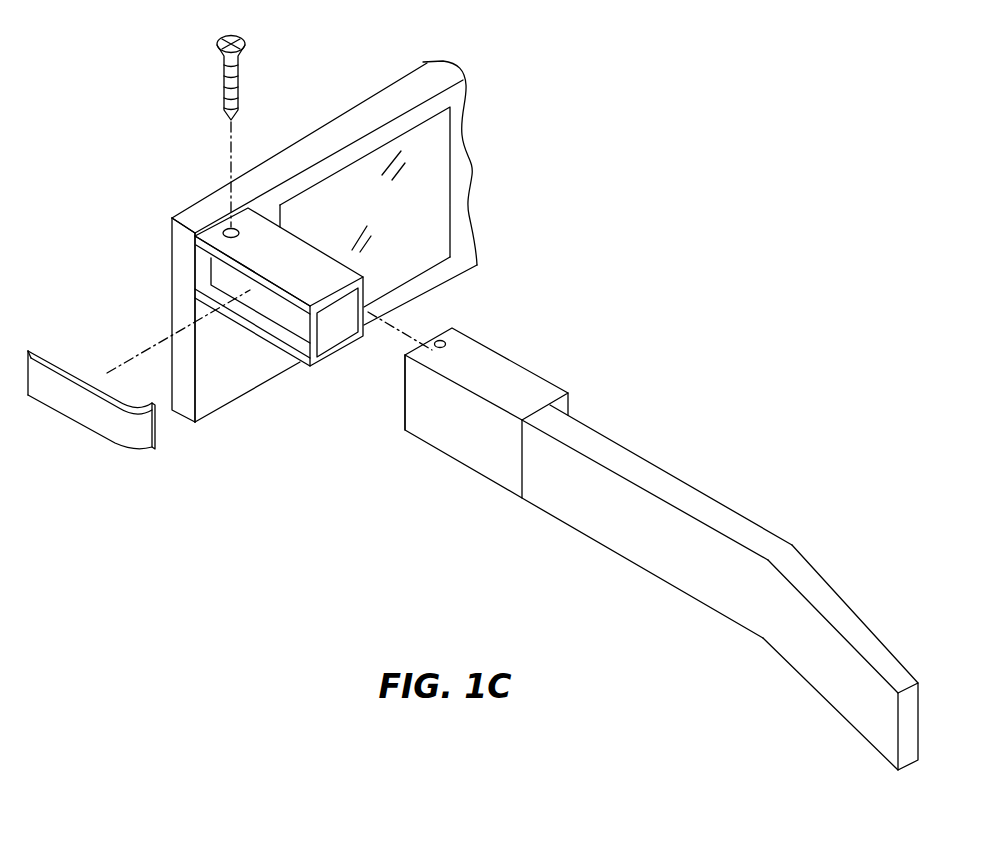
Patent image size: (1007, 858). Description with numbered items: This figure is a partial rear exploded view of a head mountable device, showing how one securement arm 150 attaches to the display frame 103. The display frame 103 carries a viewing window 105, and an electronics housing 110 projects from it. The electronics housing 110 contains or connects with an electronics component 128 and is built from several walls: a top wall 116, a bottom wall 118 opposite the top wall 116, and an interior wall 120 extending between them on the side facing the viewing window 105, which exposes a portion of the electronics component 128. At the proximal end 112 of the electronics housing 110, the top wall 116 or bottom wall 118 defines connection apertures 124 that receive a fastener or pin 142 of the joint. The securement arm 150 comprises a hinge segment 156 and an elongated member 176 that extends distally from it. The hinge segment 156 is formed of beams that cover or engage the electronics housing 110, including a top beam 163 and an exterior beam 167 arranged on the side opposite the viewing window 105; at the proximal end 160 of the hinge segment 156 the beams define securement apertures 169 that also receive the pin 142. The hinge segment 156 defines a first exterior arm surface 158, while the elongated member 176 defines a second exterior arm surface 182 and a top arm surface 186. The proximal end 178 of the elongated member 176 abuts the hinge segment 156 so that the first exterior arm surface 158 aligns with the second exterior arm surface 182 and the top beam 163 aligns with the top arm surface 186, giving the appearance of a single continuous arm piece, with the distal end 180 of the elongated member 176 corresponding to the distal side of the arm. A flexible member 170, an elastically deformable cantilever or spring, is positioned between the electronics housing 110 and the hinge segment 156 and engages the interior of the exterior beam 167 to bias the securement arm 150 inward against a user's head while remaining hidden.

The display frame 103 is at (330, 212).
The viewing window 105 is at (443, 133).
The electronics housing 110 is at (300, 287).
The proximal end of the electronics housing 112 is at (213, 238).
The top wall 116 is at (298, 284).
The bottom wall 118 is at (310, 350).
The interior wall 120 is at (379, 316).
The connection apertures 124 is at (229, 230).
The electronics component 128 is at (220, 268).
The fastener or pin 142 is at (226, 61).
The securement arm 150 is at (630, 515).
The hinge segment 156 is at (508, 368).
The first exterior arm surface 158 is at (487, 463).
The proximal end of the hinge segment 160 is at (489, 404).
The top beam 163 is at (538, 383).
The exterior beam 167 is at (425, 425).
The securement apertures 169 is at (450, 341).
The flexible member 170 is at (102, 428).
The elongated member 176 is at (827, 582).
The proximal end of the elongated member 178 is at (580, 433).
The distal end of the elongated member 180 is at (862, 715).
The second exterior arm surface 182 is at (578, 508).
The top arm surface 186 is at (720, 584).